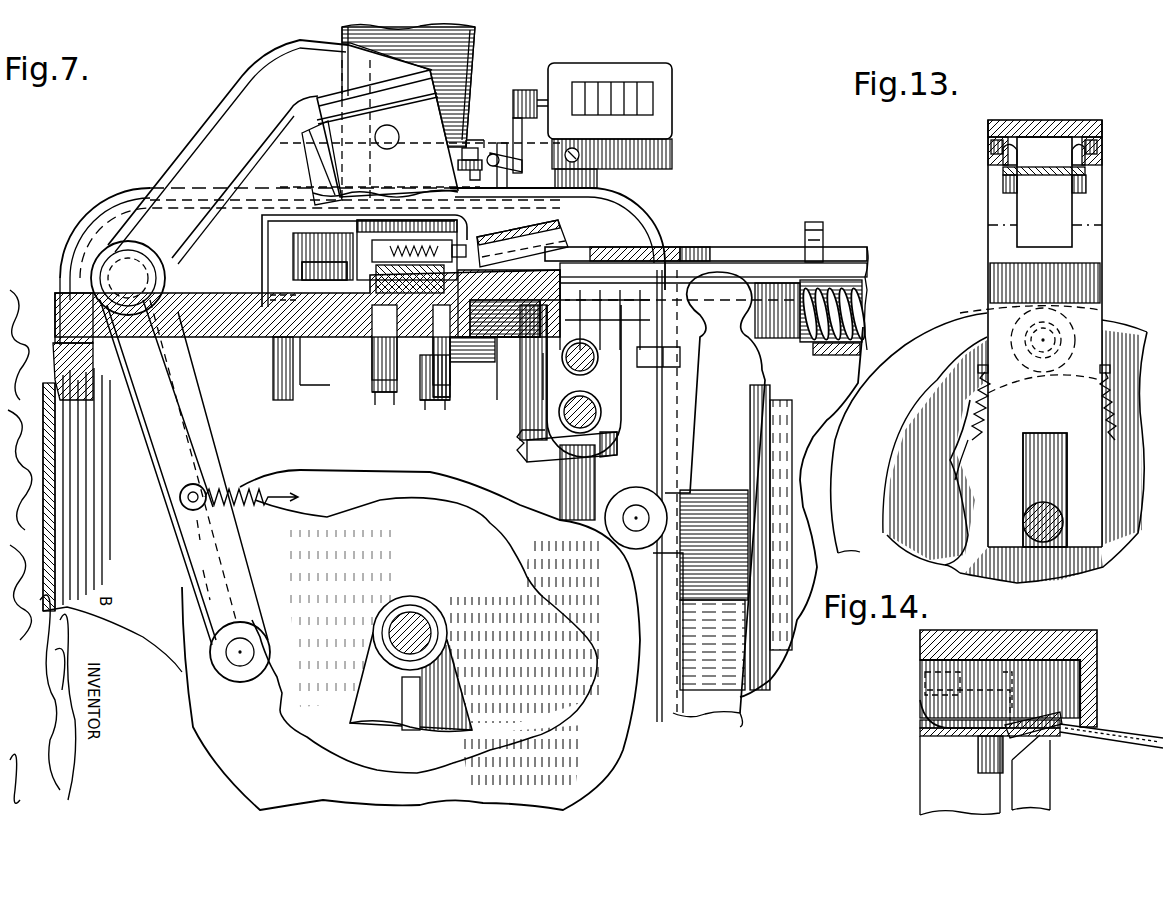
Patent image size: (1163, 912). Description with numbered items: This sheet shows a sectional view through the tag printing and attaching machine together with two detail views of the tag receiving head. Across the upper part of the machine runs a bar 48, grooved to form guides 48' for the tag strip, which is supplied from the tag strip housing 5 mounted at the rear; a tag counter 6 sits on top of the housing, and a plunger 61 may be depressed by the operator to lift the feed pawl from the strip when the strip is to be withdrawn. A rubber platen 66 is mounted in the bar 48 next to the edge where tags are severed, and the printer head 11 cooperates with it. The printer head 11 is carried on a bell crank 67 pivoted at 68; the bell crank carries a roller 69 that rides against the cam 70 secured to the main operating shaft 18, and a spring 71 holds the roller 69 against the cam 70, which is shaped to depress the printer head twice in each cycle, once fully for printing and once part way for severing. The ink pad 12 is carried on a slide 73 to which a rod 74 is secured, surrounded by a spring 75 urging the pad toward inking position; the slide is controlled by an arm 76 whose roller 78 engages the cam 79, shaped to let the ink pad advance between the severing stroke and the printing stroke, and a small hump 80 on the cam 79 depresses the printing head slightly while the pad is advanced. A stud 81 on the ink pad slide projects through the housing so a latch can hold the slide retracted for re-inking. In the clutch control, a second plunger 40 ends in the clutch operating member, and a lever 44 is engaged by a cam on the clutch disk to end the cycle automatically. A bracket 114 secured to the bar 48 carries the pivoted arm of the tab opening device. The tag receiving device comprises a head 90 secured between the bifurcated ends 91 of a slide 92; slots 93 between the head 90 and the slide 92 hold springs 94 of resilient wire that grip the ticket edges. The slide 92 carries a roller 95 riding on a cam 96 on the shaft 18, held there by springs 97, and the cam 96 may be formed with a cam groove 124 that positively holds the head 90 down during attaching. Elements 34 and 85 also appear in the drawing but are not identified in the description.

In FIG. 7, the tag strip housing 5 is at (458, 67).
In FIG. 7, the tag counter 6 is at (660, 129).
In FIG. 7, the printer head 11 is at (420, 130).
In FIG. 7, the ink pad 12 is at (539, 232).
In FIG. 7, the main operating shaft 18 is at (421, 615).
In FIG. 7, the roller stud 34 is at (595, 353).
In FIG. 7, the second plunger 40 is at (598, 416).
In FIG. 7, the lever 44 is at (542, 428).
In FIG. 7, the bar 48 is at (426, 248).
In FIG. 7, the guides 48' is at (325, 271).
In FIG. 7, the plunger 61 is at (470, 153).
In FIG. 7, the rubber platen 66 is at (345, 356).
In FIG. 7, the bell crank 67 is at (196, 149).
In FIG. 7, the pivot 68 is at (128, 278).
In FIG. 7, the roller 69 is at (226, 666).
In FIG. 7, the cam 70 is at (443, 517).
In FIG. 7, the spring 71 is at (240, 486).
In FIG. 7, the slide 73 is at (738, 262).
In FIG. 7, the rod 74 is at (862, 306).
In FIG. 7, the spring 75 is at (836, 280).
In FIG. 7, the arm 76 is at (750, 498).
In FIG. 7, the roller 78 is at (634, 494).
In FIG. 7, the cam 79 is at (428, 635).
In FIG. 7, the hump 80 is at (282, 712).
In FIG. 7, the stud 81 is at (814, 220).
In FIG. 7, the strip 85 is at (313, 165).
In FIG. 13, the head 90 is at (1050, 120).
In FIG. 14, the head 90 is at (1097, 680).
In FIG. 13, the bifurcated ends 91 is at (992, 122).
In FIG. 13, the slide 92 is at (1092, 254).
In FIG. 13, the slots 93 is at (1018, 175).
In FIG. 14, the slots 93 is at (932, 735).
In FIG. 13, the springs 94 is at (993, 162).
In FIG. 14, the springs 94 is at (930, 722).
In FIG. 13, the roller 95 is at (1074, 355).
In FIG. 13, the cam 96 is at (973, 446).
In FIG. 13, the springs 97 is at (978, 395).
In FIG. 7, the bracket 114 is at (500, 358).
In FIG. 13, the cam groove 124 is at (935, 382).